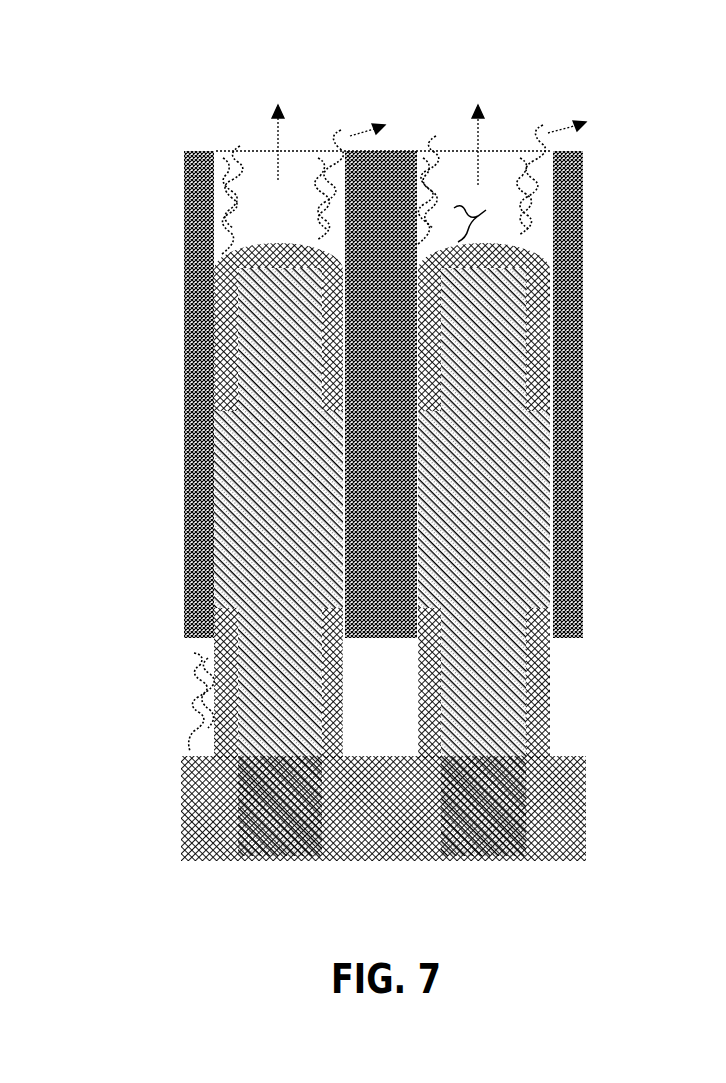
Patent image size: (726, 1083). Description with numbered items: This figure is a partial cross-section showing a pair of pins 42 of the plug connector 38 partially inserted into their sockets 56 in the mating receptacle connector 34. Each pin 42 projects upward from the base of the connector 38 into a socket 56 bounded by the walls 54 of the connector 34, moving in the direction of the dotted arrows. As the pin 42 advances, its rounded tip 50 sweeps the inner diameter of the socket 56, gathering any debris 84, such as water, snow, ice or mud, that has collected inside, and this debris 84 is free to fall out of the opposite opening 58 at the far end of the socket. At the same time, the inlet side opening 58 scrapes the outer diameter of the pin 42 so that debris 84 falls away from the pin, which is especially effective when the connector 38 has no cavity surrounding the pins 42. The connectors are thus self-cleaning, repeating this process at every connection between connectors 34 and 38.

The connector 34 is at (157, 416).
The connector 38 is at (155, 814).
The pin 42 is at (494, 435).
The tip 50 is at (292, 233).
The sidewall 54 is at (178, 536).
The socket 56 is at (272, 204).
The opening 58 is at (238, 141).
The debris 84 is at (473, 203).